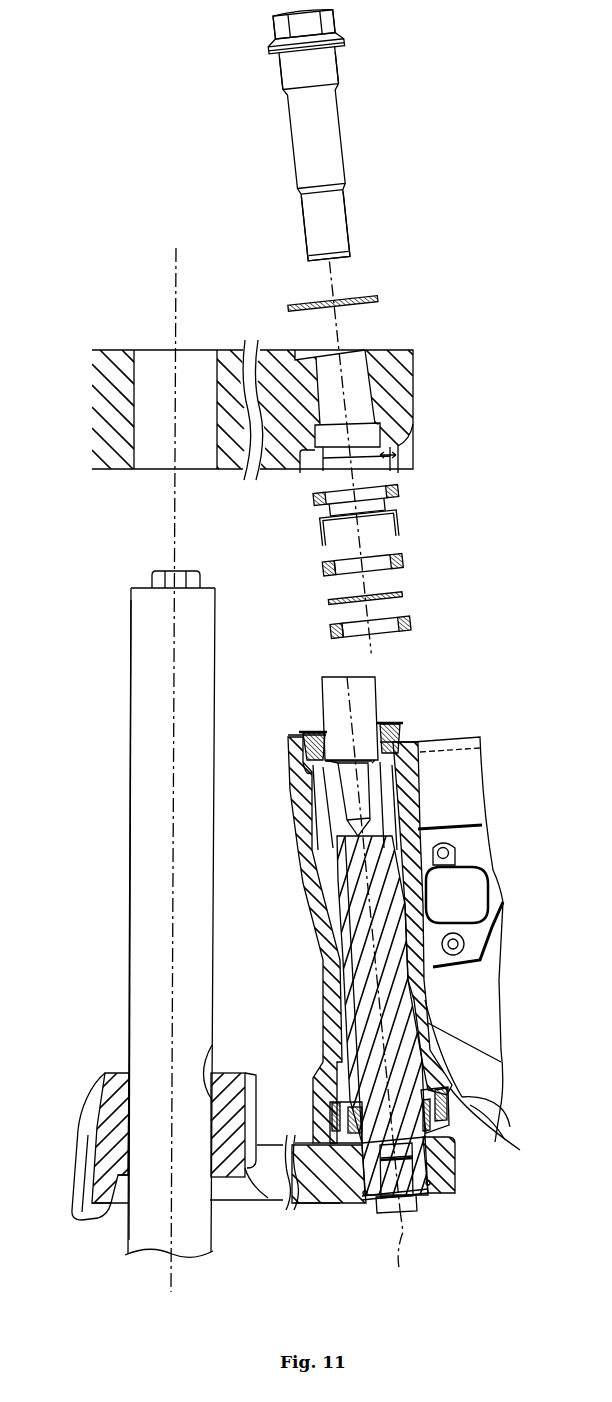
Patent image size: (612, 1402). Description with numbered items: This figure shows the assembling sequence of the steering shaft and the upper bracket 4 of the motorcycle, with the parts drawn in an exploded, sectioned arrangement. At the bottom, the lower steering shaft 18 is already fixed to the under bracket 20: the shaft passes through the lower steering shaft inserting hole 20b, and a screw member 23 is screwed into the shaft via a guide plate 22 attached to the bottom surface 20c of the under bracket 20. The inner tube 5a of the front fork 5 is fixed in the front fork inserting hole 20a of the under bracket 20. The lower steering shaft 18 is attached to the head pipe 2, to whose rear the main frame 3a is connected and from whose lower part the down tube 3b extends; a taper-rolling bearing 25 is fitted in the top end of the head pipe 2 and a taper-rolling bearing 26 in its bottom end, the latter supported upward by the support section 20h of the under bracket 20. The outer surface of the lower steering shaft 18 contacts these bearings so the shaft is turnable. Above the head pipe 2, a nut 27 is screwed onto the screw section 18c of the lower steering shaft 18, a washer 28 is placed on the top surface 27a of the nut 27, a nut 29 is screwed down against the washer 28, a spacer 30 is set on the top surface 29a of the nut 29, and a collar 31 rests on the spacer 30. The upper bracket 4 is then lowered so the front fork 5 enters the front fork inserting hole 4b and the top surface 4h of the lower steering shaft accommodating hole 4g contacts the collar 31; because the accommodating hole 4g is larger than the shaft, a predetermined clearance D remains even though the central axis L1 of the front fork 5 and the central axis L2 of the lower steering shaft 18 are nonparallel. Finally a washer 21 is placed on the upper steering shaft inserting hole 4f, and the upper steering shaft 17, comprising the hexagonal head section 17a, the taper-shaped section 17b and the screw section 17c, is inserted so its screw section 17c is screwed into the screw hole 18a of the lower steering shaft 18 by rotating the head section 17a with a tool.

The upper steering shaft 17 is at (323, 150).
The head section 17a is at (328, 22).
The taper-shaped section 17b is at (336, 92).
The screw section 17c is at (343, 232).
The washer 21 is at (378, 301).
The upper bracket 4 is at (398, 390).
The front fork inserting hole 4b is at (138, 373).
The upper steering shaft inserting hole 4f is at (363, 366).
The lower steering shaft accommodating hole 4g is at (398, 472).
The top surface of lower steering shaft accommodating hole 4h is at (300, 470).
The predetermined clearance D is at (400, 442).
The collar 31 is at (400, 493).
The spacer 30 is at (398, 524).
The nut 29 is at (404, 563).
The top surface of nut 29a is at (349, 560).
The washer 28 is at (404, 597).
The nut 27 is at (411, 626).
The top surface of nut 27a is at (355, 620).
The taper-rolling bearing 25 is at (315, 735).
The lower steering shaft 18 is at (383, 897).
The screw hole 18a is at (343, 812).
The screw section 18c is at (378, 703).
The front fork 5 is at (138, 620).
The inner tube 5a is at (143, 740).
The head pipe 2 is at (298, 850).
The main frame 3a is at (460, 790).
The down tube 3b is at (488, 1082).
The under bracket 20 is at (460, 1165).
The front fork inserting hole 20a is at (200, 1100).
The lower steering shaft inserting hole 20b is at (430, 1195).
The bottom surface 20c is at (337, 1207).
The support section 20h is at (468, 1118).
The taper-rolling bearing 26 is at (447, 1118).
The guide plate 22 is at (380, 1208).
The screw member 23 is at (415, 1212).
The central axis of front forks L1 is at (176, 278).
The central axis of lower steering shaft L2 is at (393, 1252).